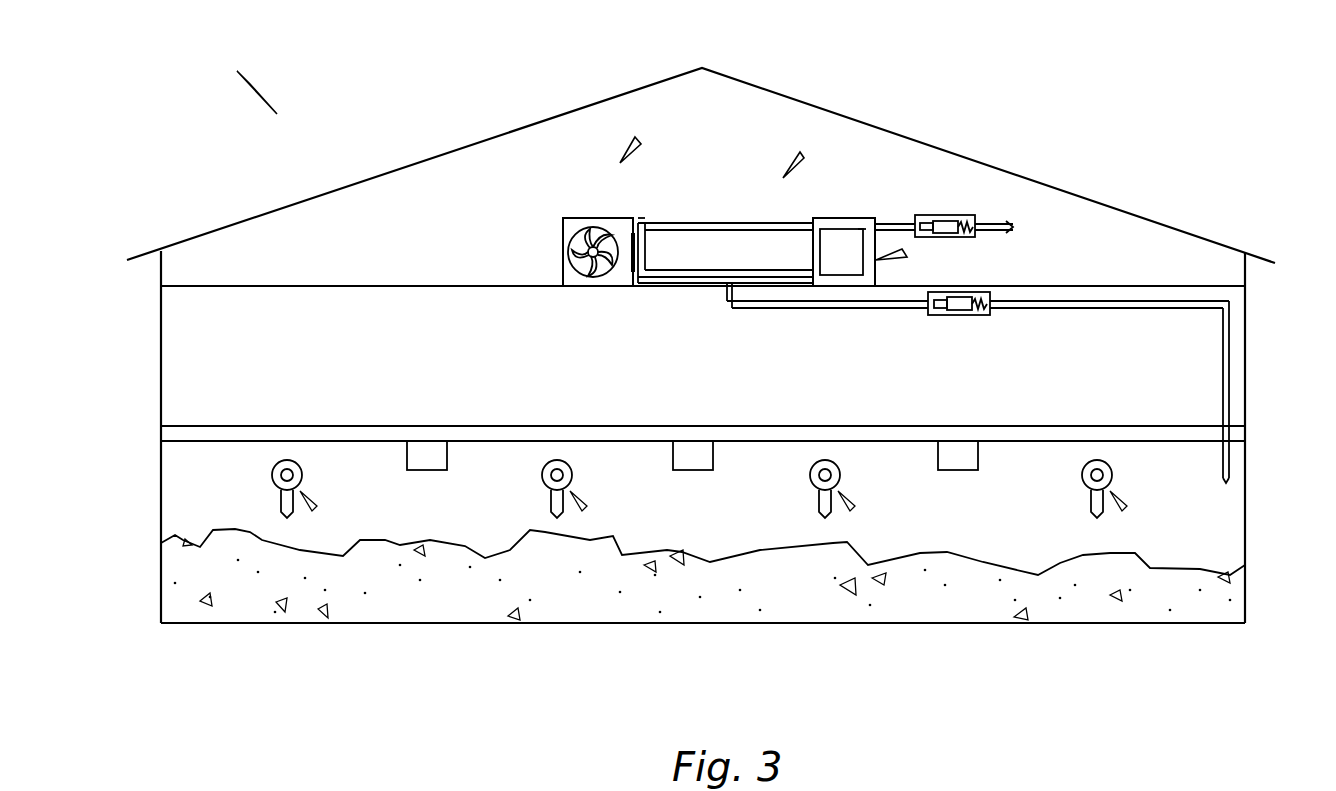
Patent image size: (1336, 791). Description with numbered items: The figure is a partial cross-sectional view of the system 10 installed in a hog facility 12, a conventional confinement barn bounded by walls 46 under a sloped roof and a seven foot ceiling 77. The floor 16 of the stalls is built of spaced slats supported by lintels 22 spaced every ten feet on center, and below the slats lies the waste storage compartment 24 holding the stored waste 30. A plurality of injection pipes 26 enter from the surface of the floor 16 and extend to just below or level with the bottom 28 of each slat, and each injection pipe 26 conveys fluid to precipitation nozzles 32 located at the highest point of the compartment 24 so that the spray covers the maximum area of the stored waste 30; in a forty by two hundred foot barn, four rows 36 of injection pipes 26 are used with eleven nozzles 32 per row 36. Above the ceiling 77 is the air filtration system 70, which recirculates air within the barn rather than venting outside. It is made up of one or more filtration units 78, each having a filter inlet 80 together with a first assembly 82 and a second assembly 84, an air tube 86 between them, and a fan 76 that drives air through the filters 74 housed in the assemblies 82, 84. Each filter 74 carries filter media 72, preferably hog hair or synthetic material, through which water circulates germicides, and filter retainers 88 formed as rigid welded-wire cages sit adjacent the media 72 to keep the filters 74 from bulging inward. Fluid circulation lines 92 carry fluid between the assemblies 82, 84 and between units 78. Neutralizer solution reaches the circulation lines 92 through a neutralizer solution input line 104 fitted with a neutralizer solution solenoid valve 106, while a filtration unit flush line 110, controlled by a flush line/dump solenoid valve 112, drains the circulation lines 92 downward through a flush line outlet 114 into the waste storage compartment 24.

The system 10 is at (242, 78).
The hog facility 12 is at (530, 122).
The floor 16 is at (182, 426).
The lintels 22 is at (447, 455).
The waste storage compartment 24 is at (185, 512).
The injection pipes 26 is at (303, 472).
The bottom of slat 28 is at (176, 442).
The stored waste 30 is at (935, 623).
The precipitation nozzles 32 is at (281, 495).
The rows of injection pipes 36 is at (315, 508).
The side walls 46 is at (160, 331).
The air filtration system 70 is at (640, 141).
The filter media 72 is at (642, 252).
The filter 74 is at (639, 220).
The fan 76 is at (570, 245).
The ceiling 77 is at (253, 287).
The filtration unit 78 is at (803, 154).
The filter inlet 80 is at (906, 253).
The first assembly 82 is at (833, 218).
The second assembly 84 is at (590, 218).
The air tube 86 is at (703, 260).
The filter retainers 88 is at (628, 272).
The fluid circulation lines 92 is at (730, 223).
The neutralizer solution input line 104 is at (897, 223).
The neutralizer solution solenoid valve 106 is at (952, 215).
The filtration unit flush line 110 is at (828, 308).
The flush line/dump solenoid valve 112 is at (962, 315).
The flush line outlet 114 is at (1228, 482).